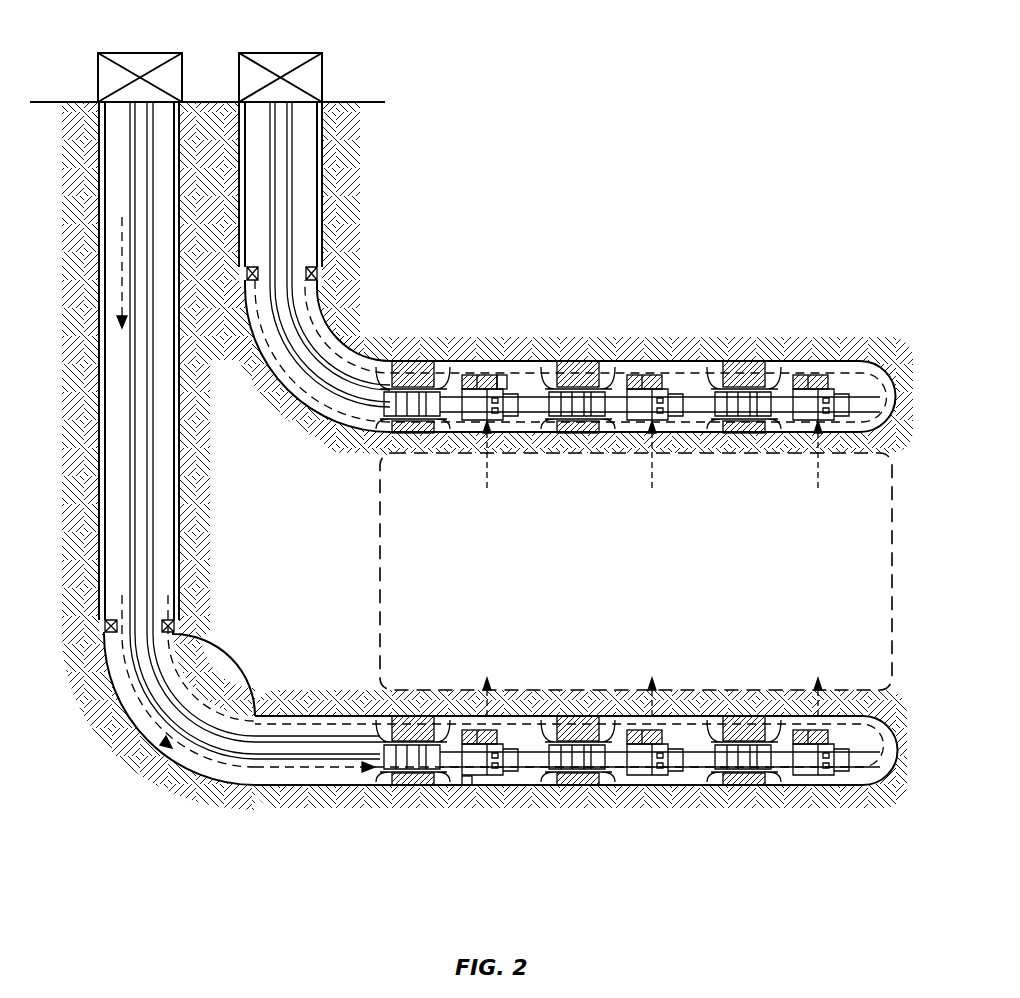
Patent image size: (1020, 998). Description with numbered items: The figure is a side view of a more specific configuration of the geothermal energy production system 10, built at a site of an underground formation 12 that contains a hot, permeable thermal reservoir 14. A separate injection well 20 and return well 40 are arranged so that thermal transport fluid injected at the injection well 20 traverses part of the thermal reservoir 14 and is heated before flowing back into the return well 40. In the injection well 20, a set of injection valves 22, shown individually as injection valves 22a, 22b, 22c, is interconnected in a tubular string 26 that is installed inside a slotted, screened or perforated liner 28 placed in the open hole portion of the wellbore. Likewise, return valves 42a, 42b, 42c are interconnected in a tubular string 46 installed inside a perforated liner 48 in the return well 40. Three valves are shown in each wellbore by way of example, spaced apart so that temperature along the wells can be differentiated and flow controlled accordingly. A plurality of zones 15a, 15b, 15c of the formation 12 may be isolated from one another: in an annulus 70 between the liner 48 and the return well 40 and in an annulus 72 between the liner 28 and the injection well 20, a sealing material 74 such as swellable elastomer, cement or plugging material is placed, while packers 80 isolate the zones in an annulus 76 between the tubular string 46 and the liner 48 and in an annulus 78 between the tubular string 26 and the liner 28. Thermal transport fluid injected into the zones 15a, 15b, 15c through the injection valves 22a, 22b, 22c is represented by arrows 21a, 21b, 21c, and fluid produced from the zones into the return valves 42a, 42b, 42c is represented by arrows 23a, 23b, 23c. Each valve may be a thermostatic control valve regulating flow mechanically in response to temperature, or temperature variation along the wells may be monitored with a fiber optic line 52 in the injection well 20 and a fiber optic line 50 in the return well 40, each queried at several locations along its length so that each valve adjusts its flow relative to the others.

The geothermal energy production system 10 is at (862, 32).
The underground formation 12 is at (517, 908).
The thermal reservoir 14 is at (378, 578).
The zone 15a is at (516, 492).
The zone 15b is at (682, 492).
The zone 15c is at (850, 492).
The injection well 20 is at (330, 392).
The arrow 21a is at (492, 700).
The arrow 21b is at (658, 700).
The arrow 21c is at (824, 700).
The injection valves 22 is at (118, 270).
The injection valve 22a is at (478, 730).
The injection valve 22b is at (644, 730).
The injection valve 22c is at (810, 730).
The arrow 23a is at (485, 462).
The arrow 23b is at (652, 462).
The arrow 23c is at (818, 462).
The tubular string 26 is at (232, 775).
The perforated liner 28 is at (718, 725).
The return well 40 is at (865, 430).
The return valve 42a is at (380, 430).
The return valve 42b is at (640, 375).
The return valve 42c is at (805, 375).
The tubular string 46 is at (284, 362).
The perforated liner 48 is at (872, 358).
The fiber optic line 50 is at (296, 248).
The fiber optic line 52 is at (158, 610).
The annulus 70 is at (540, 432).
The annulus 72 is at (690, 780).
The sealing material 74 is at (430, 362).
The annulus 76 is at (505, 376).
The annulus 78 is at (470, 790).
The packers 80 is at (400, 362).